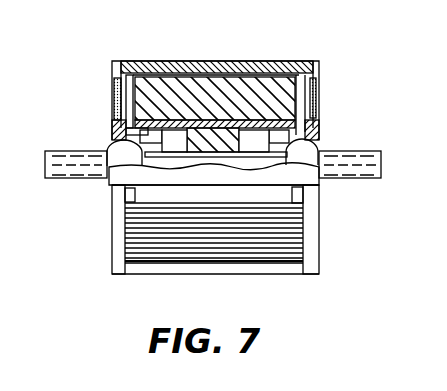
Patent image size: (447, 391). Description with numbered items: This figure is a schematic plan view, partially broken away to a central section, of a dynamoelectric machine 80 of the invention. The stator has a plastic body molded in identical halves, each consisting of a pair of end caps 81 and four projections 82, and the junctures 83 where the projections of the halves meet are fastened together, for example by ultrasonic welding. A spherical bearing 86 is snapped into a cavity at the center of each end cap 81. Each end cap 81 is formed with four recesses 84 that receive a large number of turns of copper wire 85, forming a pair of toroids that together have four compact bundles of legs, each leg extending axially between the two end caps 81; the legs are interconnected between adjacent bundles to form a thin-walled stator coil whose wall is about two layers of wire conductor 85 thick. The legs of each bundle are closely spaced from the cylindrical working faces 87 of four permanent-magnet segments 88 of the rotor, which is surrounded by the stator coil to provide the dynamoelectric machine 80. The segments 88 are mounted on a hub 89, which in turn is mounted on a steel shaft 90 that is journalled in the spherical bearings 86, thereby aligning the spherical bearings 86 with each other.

The dynamoelectric machine 80 is at (306, 277).
The end cap 81 is at (110, 125).
The projection 82 is at (249, 61).
The juncture 83 is at (204, 66).
The recess 84 is at (153, 258).
The copper wire 85 is at (115, 85).
The spherical bearing 86 is at (112, 152).
The cylindrical working face 87 is at (125, 73).
The permanent-magnet segment 88 is at (274, 88).
The hub 89 is at (305, 85).
The steel shaft 90 is at (367, 174).